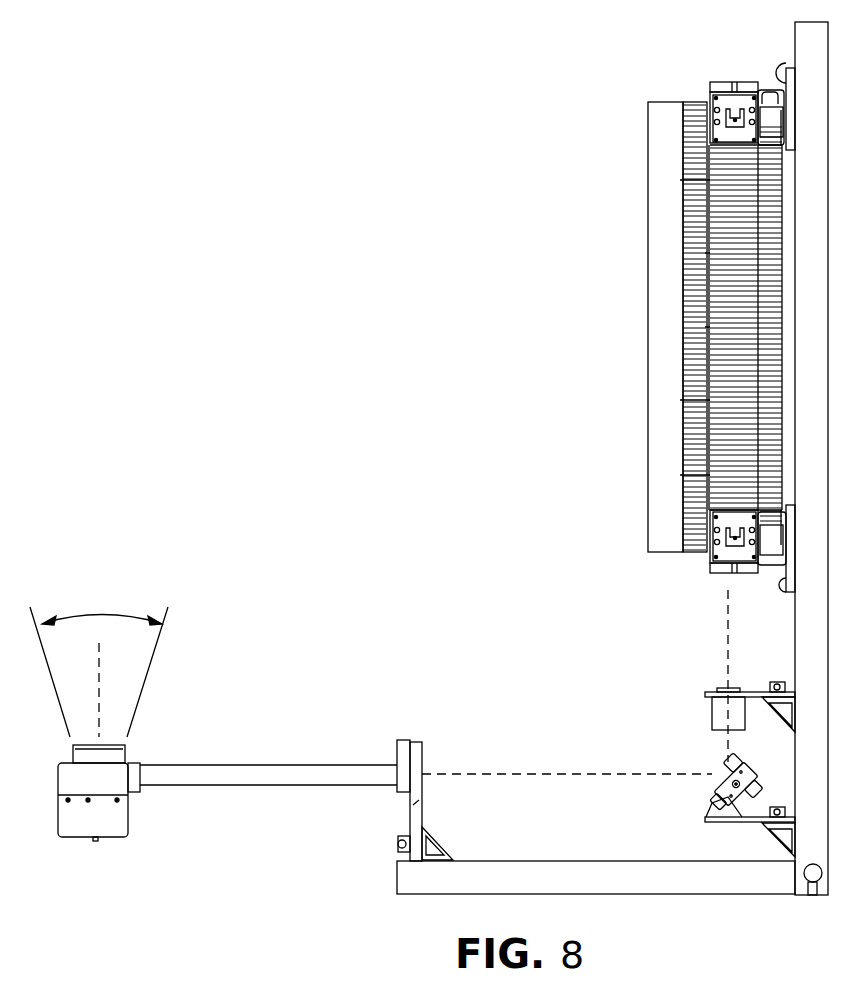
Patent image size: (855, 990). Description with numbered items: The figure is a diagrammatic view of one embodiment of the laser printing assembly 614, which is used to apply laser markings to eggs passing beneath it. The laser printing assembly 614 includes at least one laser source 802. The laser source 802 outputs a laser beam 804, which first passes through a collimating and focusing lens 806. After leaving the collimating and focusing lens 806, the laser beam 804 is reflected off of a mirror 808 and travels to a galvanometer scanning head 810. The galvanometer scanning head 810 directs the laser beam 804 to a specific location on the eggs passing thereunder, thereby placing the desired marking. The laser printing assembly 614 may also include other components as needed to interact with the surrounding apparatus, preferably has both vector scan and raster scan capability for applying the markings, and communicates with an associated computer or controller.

The laser printing assembly 614 is at (556, 231).
The laser source 802 is at (686, 353).
The laser beam 804 is at (728, 628).
The collimating and focusing lens 806 is at (710, 713).
The mirror 808 is at (717, 807).
The galvanometer scanning head 810 is at (115, 818).